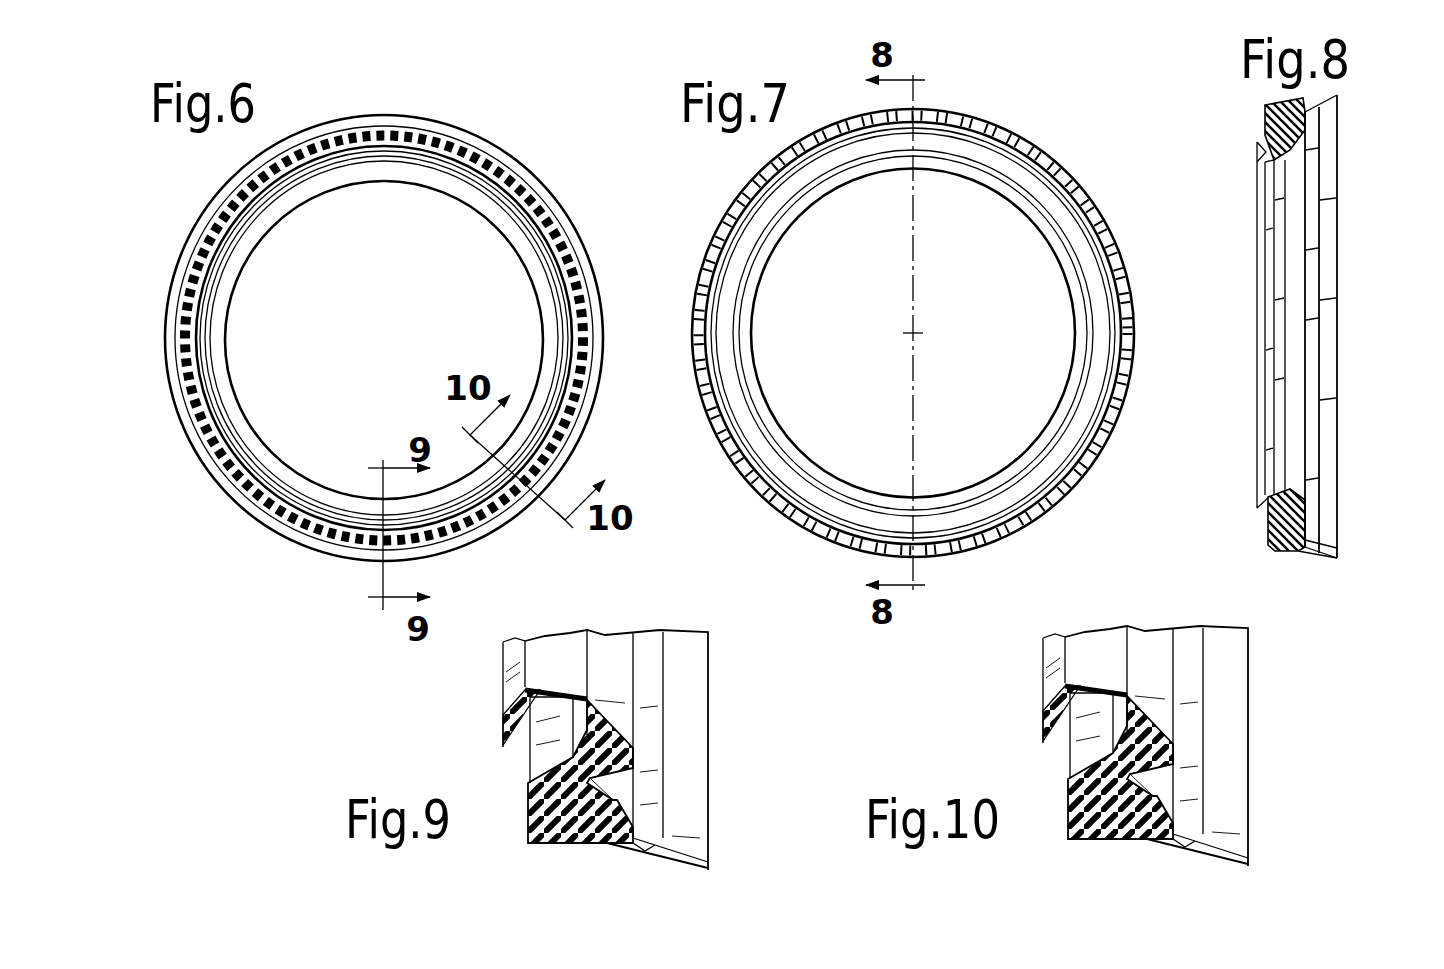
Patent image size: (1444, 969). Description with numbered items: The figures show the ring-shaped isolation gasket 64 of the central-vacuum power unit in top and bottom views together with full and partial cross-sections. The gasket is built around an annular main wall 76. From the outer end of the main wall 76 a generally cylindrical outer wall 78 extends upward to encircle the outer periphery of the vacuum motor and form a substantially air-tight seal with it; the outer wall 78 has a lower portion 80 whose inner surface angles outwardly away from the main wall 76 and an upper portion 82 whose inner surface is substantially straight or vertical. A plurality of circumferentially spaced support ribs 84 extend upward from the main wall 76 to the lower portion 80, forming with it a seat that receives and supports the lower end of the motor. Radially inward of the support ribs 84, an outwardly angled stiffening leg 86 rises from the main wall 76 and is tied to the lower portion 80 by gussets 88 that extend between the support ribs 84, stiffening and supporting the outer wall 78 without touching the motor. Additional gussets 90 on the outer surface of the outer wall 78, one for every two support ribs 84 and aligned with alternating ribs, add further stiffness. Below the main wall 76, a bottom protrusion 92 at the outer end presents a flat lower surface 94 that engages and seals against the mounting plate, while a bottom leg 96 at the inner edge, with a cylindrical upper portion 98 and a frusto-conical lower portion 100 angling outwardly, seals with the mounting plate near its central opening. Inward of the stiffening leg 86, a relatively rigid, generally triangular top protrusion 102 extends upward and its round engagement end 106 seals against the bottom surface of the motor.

In FIG. 6, the isolation gasket 64 is at (503, 110).
In FIG. 7, the isolation gasket 64 is at (1040, 108).
In FIG. 8, the isolation gasket 64 is at (1350, 178).
In FIG. 6, the main wall 76 is at (507, 228).
In FIG. 8, the main wall 76 is at (1303, 495).
In FIG. 9, the main wall 76 is at (590, 697).
In FIG. 10, the main wall 76 is at (1156, 722).
In FIG. 6, the outer wall 78 is at (541, 180).
In FIG. 7, the outer wall 78 is at (1093, 462).
In FIG. 8, the outer wall 78 is at (1334, 562).
In FIG. 9, the outer wall 78 is at (710, 828).
In FIG. 10, the outer wall 78 is at (1286, 809).
In FIG. 9, the lower portion 80 is at (673, 810).
In FIG. 10, the lower portion 80 is at (1267, 775).
In FIG. 9, the upper portion 82 is at (687, 830).
In FIG. 10, the upper portion 82 is at (1274, 797).
In FIG. 6, the support ribs 84 is at (458, 535).
In FIG. 8, the support ribs 84 is at (1296, 526).
In FIG. 9, the support ribs 84 is at (650, 790).
In FIG. 10, the support ribs 84 is at (1226, 759).
In FIG. 6, the stiffening leg 86 is at (508, 508).
In FIG. 9, the stiffening leg 86 is at (640, 767).
In FIG. 10, the stiffening leg 86 is at (1251, 719).
In FIG. 6, the gussets 88 is at (488, 515).
In FIG. 10, the gussets 88 is at (1277, 741).
In FIG. 7, the gussets 90 is at (1030, 523).
In FIG. 8, the gussets 90 is at (1324, 560).
In FIG. 9, the gussets 90 is at (653, 853).
In FIG. 10, the gussets 90 is at (1185, 862).
In FIG. 7, the bottom protrusion 92 is at (975, 512).
In FIG. 8, the bottom protrusion 92 is at (1288, 550).
In FIG. 9, the bottom protrusion 92 is at (560, 847).
In FIG. 10, the bottom protrusion 92 is at (1108, 864).
In FIG. 7, the lower surface 94 is at (1068, 462).
In FIG. 8, the lower surface 94 is at (1270, 525).
In FIG. 9, the lower surface 94 is at (528, 817).
In FIG. 10, the lower surface 94 is at (1090, 767).
In FIG. 7, the bottom leg 96 is at (876, 493).
In FIG. 8, the bottom leg 96 is at (1264, 494).
In FIG. 9, the bottom leg 96 is at (553, 683).
In FIG. 10, the bottom leg 96 is at (1078, 674).
In FIG. 6, the upper portion 98 is at (556, 503).
In FIG. 9, the upper portion 98 is at (573, 700).
In FIG. 10, the upper portion 98 is at (1123, 617).
In FIG. 9, the lower portion 100 is at (520, 700).
In FIG. 10, the lower portion 100 is at (1017, 705).
In FIG. 6, the top protrusion 102 is at (330, 503).
In FIG. 8, the top protrusion 102 is at (1306, 514).
In FIG. 9, the top protrusion 102 is at (617, 733).
In FIG. 10, the top protrusion 102 is at (1193, 678).
In FIG. 9, the engagement end 106 is at (633, 747).
In FIG. 10, the engagement end 106 is at (1252, 696).